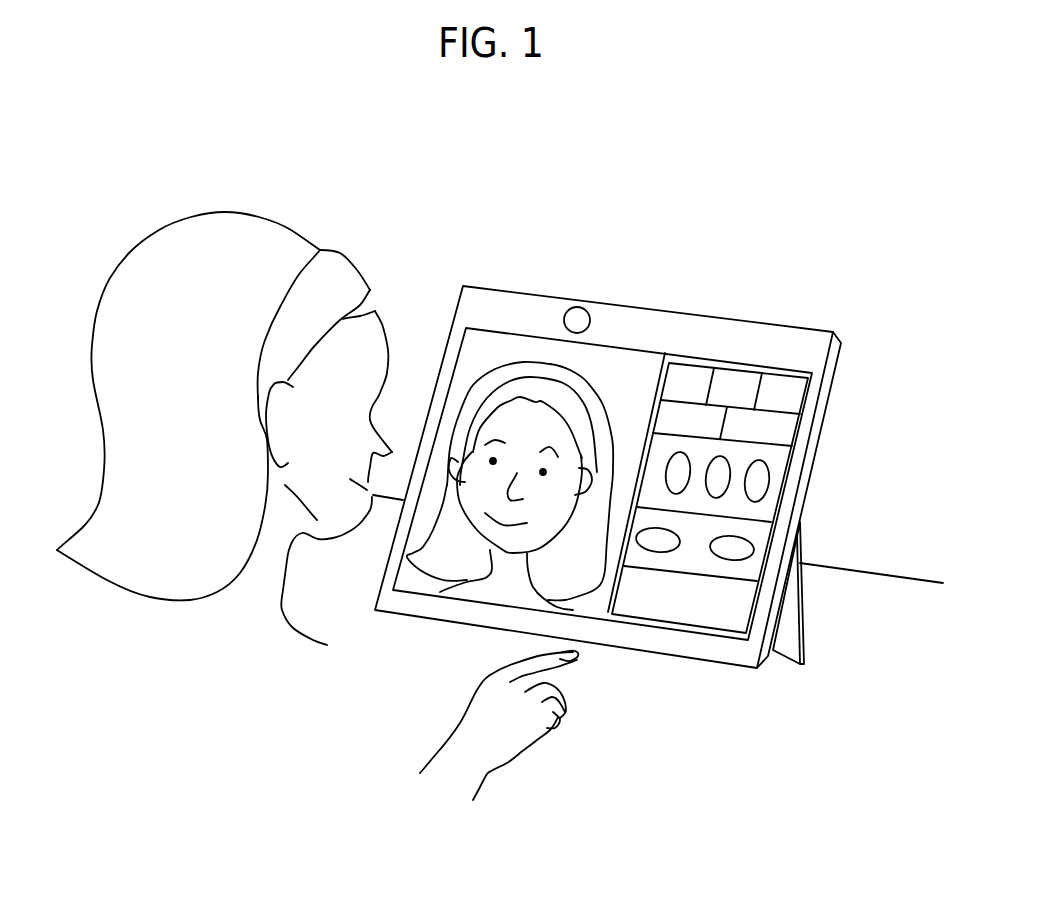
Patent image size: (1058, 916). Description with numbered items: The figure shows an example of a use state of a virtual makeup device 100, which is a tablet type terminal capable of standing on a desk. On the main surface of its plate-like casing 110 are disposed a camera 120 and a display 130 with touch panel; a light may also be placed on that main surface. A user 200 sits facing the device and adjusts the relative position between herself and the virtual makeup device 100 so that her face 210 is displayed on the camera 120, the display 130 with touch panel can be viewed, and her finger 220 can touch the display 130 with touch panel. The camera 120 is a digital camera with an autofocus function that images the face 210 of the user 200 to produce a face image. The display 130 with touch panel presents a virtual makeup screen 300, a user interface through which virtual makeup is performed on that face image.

The virtual makeup device 100 is at (532, 250).
The casing 110 is at (690, 313).
The camera 120 is at (578, 309).
The display with touch panel 130 is at (745, 357).
The virtual makeup screen 300 is at (793, 397).
The user 200 is at (238, 210).
The face 210 is at (377, 313).
The finger 220 is at (572, 655).